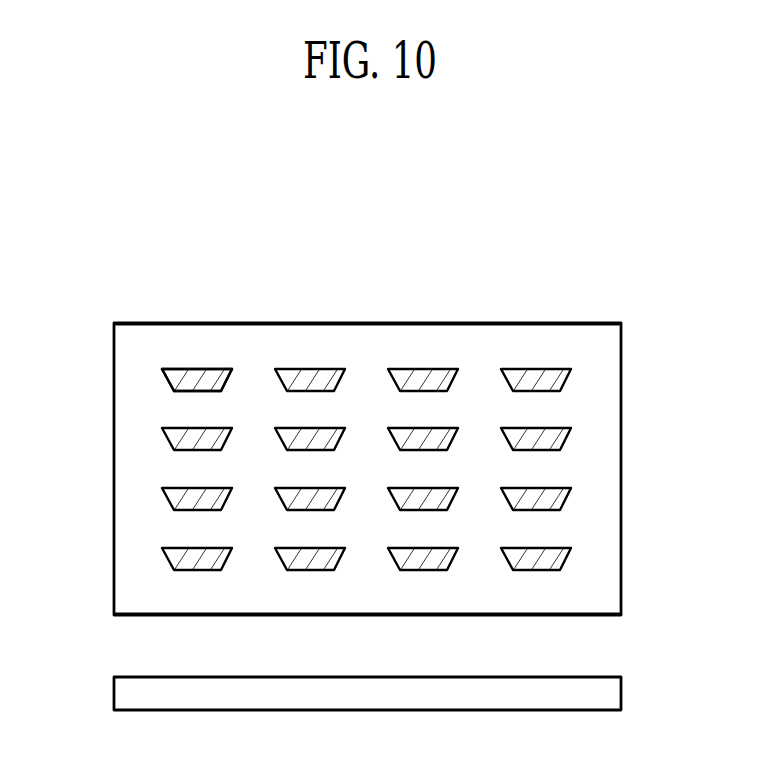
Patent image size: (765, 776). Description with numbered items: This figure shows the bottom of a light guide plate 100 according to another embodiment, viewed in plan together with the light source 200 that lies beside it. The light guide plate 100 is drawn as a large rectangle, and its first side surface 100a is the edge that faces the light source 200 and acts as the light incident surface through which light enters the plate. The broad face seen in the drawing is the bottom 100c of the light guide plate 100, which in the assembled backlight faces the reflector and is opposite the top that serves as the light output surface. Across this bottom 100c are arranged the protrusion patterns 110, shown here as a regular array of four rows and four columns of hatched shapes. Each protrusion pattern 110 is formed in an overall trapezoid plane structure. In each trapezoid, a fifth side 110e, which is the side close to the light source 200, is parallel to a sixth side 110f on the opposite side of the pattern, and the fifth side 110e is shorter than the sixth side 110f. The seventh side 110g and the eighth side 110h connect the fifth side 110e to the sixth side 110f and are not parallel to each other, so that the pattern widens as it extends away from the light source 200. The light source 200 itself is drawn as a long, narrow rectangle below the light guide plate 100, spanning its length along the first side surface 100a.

The light guide plate 100 is at (621, 467).
The first side surface 100a is at (591, 616).
The bottom 100c is at (600, 404).
The protrusion patterns 110 is at (307, 382).
The fifth side 110e is at (197, 392).
The sixth side 110f is at (205, 368).
The seventh side 110g is at (163, 380).
The eighth side 110h is at (231, 380).
The light source 200 is at (621, 693).